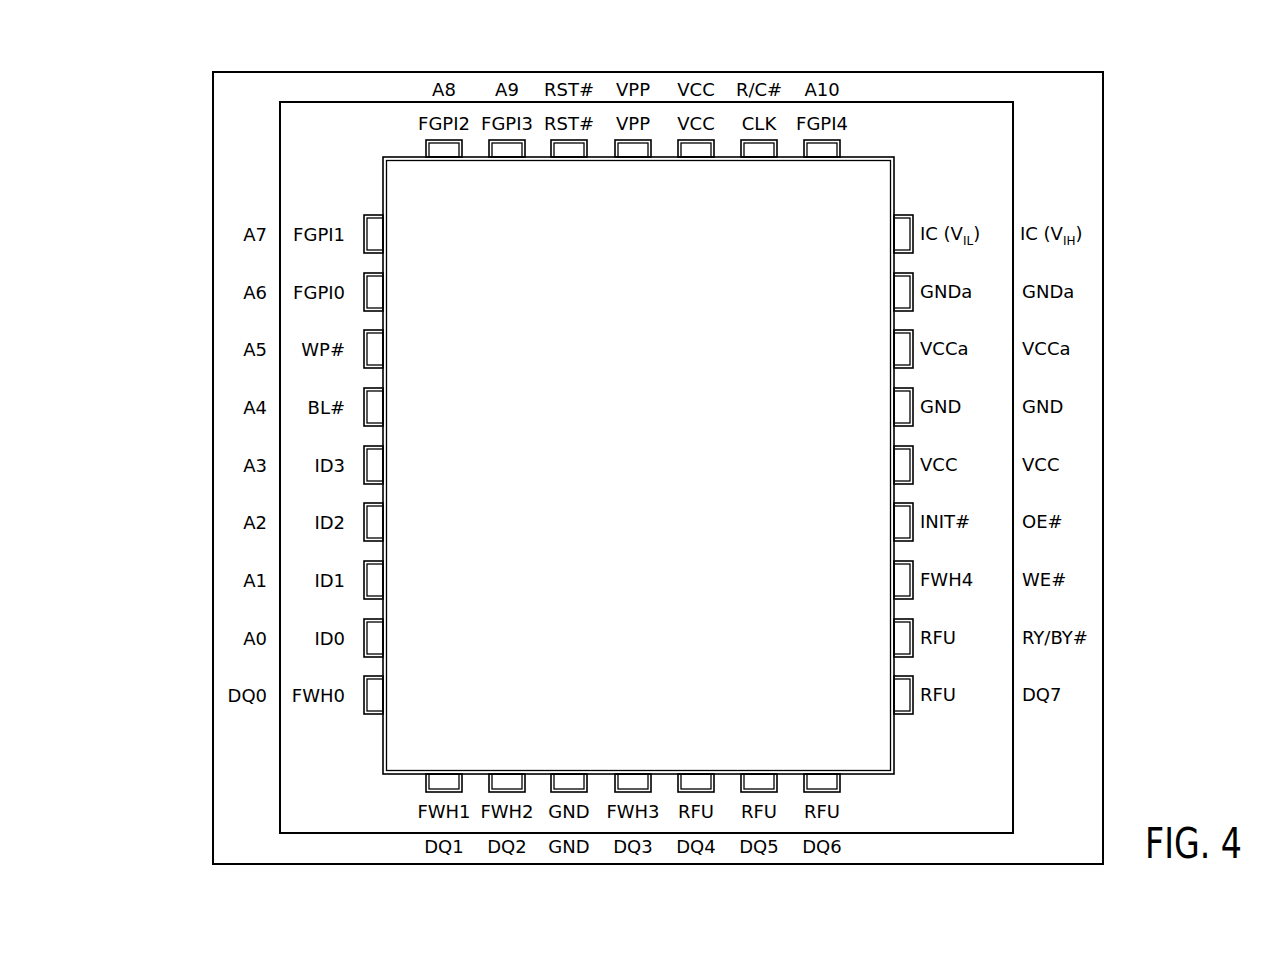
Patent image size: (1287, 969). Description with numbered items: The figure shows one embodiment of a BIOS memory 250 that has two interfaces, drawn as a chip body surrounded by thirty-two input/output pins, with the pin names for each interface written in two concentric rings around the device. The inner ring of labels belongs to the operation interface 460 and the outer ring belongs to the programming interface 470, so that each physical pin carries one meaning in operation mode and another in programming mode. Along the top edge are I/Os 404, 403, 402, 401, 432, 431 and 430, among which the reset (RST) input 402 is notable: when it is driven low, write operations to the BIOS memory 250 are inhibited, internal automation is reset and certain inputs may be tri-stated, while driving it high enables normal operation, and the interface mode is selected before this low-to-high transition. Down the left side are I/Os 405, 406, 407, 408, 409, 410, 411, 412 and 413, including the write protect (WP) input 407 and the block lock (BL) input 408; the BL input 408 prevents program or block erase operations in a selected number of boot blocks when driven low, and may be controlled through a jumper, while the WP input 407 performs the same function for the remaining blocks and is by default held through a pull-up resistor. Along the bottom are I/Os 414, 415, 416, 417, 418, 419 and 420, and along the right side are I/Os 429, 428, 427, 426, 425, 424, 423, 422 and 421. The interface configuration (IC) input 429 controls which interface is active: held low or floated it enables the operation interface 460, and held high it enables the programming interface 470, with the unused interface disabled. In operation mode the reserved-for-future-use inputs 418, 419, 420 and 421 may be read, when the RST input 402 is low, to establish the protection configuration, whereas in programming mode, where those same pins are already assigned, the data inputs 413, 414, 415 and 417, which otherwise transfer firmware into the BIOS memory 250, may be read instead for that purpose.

The BIOS memory 250 is at (624, 417).
The I/O 401 is at (636, 160).
The reset (RST) input 402 is at (572, 160).
The I/O 403 is at (510, 160).
The I/O 404 is at (447, 160).
The I/O 405 is at (379, 234).
The I/O 406 is at (379, 292).
The write protect (WP) input 407 is at (379, 349).
The block lock (BL) input 408 is at (379, 407).
The I/O 409 is at (379, 465).
The I/O 410 is at (379, 522).
The I/O 411 is at (379, 580).
The I/O 412 is at (379, 638).
The protection input 413 is at (379, 695).
The protection input 414 is at (444, 772).
The protection input 415 is at (507, 772).
The I/O 416 is at (569, 772).
The protection input 417 is at (633, 772).
The reserved for future use (RFU) input 418 is at (696, 772).
The reserved for future use (RFU) input 419 is at (759, 772).
The reserved for future use (RFU) input 420 is at (822, 772).
The reserved for future use (RFU) input 421 is at (894, 695).
The I/O 422 is at (894, 638).
The I/O 423 is at (894, 580).
The I/O 424 is at (894, 522).
The I/O 425 is at (894, 465).
The I/O 426 is at (894, 407).
The I/O 427 is at (894, 349).
The I/O 428 is at (894, 292).
The interface configuration (IC) input 429 is at (894, 234).
The I/O 430 is at (825, 160).
The I/O 431 is at (762, 160).
The I/O 432 is at (699, 160).
The operation interface 460 is at (987, 156).
The programming interface 470 is at (962, 92).